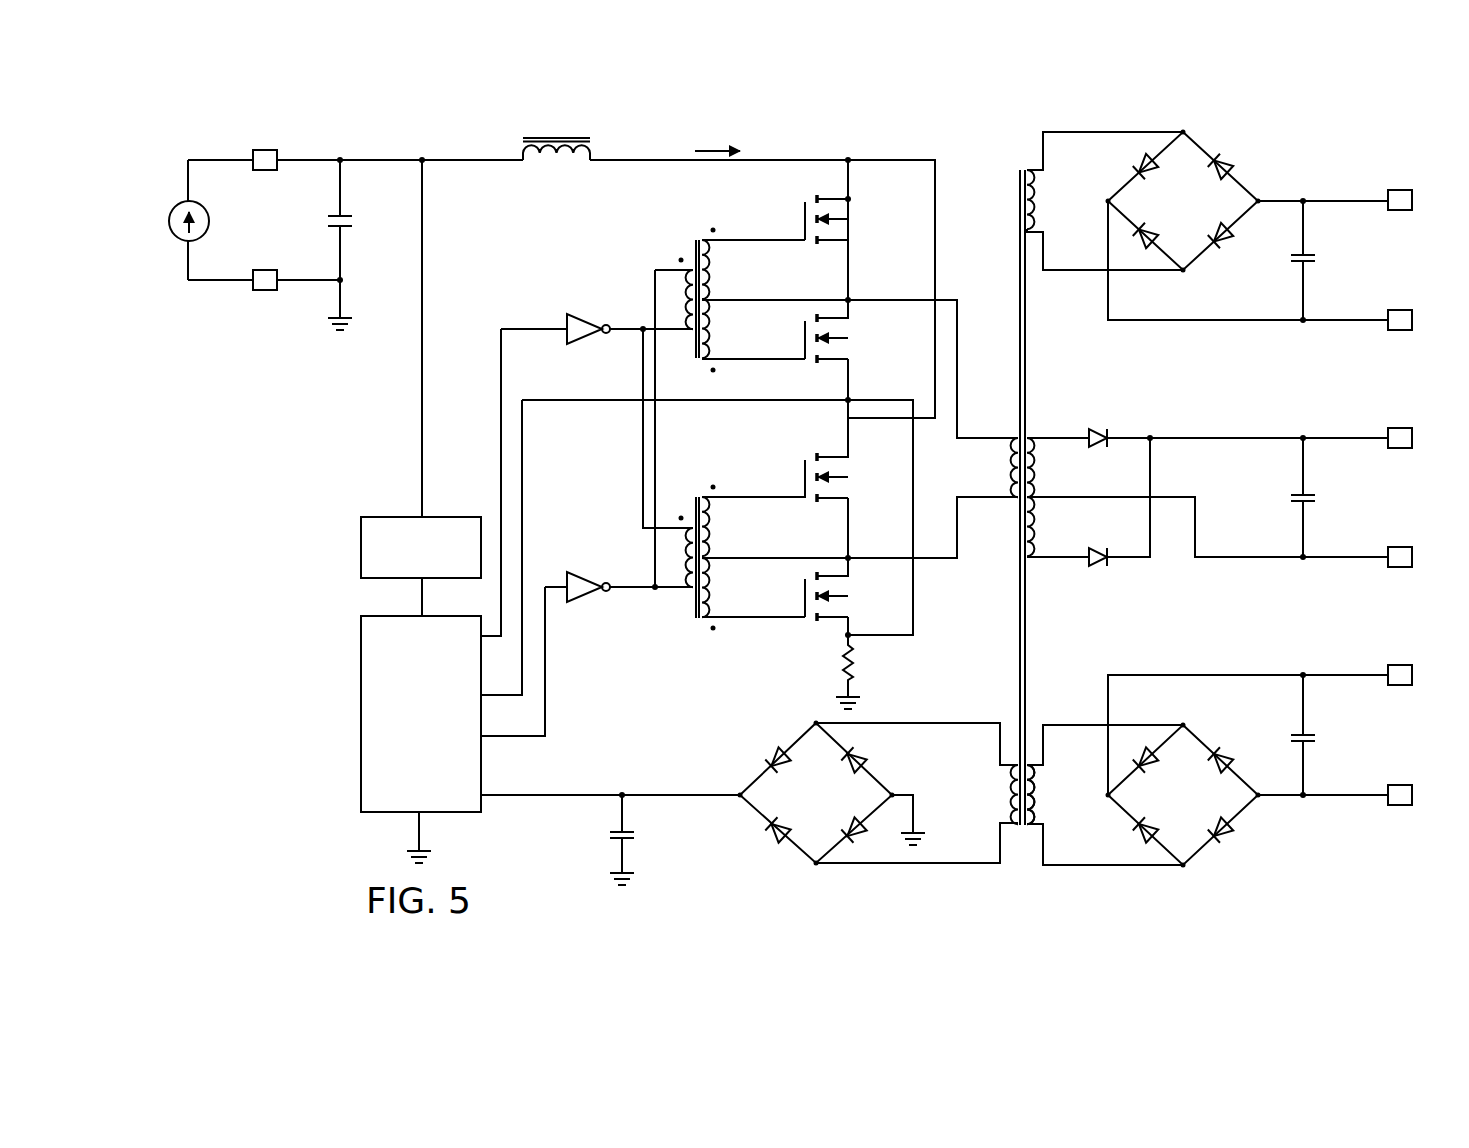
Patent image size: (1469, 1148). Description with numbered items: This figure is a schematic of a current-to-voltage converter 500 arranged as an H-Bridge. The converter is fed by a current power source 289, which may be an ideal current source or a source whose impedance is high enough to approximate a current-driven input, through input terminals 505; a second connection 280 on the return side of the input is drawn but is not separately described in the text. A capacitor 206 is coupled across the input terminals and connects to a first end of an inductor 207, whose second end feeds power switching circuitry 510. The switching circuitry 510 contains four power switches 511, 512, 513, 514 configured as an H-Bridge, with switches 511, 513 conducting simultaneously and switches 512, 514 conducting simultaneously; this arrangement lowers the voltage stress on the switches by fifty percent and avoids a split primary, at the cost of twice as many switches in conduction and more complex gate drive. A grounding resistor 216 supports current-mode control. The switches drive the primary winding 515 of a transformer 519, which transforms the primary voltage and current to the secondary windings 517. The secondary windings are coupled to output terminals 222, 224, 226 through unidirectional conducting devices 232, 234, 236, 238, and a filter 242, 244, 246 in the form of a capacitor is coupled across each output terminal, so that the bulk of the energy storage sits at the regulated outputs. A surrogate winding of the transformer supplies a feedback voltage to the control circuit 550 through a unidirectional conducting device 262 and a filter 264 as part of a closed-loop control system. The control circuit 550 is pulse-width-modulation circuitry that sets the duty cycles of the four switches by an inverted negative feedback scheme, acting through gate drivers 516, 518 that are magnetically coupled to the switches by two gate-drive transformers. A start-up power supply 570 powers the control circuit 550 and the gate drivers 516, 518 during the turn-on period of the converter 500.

The current-to-voltage converter 500 is at (180, 697).
The input terminals 505 is at (170, 150).
The current power source 289 is at (168, 218).
The input return terminal 280 is at (222, 280).
The capacitor 206 is at (326, 222).
The inductor 207 is at (563, 135).
The power switching circuitry 510 is at (895, 138).
The power switch 511 is at (803, 219).
The power switch 512 is at (803, 339).
The power switch 513 is at (803, 479).
The power switch 514 is at (803, 599).
The primary winding 515 is at (1003, 437).
The gate driver 516 is at (588, 343).
The secondary windings 517 is at (1015, 162).
The gate driver 518 is at (588, 601).
The transformer 519 is at (1008, 868).
The grounding resistor 216 is at (842, 655).
The output terminal 222 is at (1428, 178).
The output terminal 224 is at (1423, 574).
The output terminal 226 is at (1426, 826).
The unidirectional conducting device 232 is at (1268, 170).
The unidirectional conducting device 234 is at (1108, 450).
The unidirectional conducting device 236 is at (1108, 567).
The unidirectional conducting device 238 is at (1268, 830).
The filter 242 is at (1290, 257).
The filter 244 is at (1290, 497).
The filter 246 is at (1290, 736).
The unidirectional conducting device 262 is at (905, 867).
The filter 264 is at (608, 836).
The control circuit 550 is at (358, 707).
The start-up power supply 570 is at (358, 552).